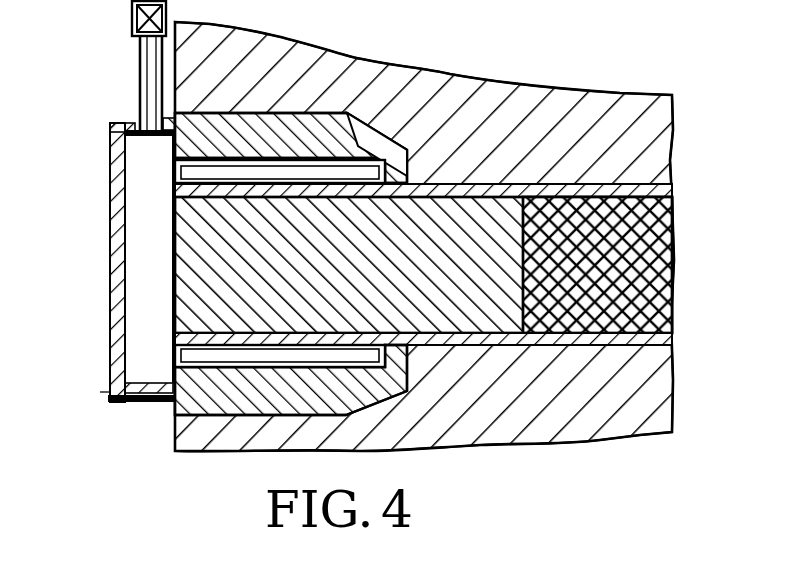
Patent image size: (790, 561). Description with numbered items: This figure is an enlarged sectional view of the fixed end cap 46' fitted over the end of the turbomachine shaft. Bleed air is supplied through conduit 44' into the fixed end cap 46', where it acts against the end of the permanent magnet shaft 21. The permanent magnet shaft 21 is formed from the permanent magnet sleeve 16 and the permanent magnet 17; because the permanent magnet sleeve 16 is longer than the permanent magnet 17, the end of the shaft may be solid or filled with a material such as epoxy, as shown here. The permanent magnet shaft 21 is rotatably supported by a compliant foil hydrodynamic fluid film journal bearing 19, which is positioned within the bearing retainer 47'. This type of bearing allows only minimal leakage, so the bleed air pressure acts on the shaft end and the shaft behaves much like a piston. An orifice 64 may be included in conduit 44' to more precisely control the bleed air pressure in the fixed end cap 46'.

The permanent magnet sleeve 16 is at (590, 180).
The permanent magnet 17 is at (658, 233).
The compliant foil hydrodynamic fluid film journal bearing 19 is at (372, 130).
The permanent magnet shaft 21 is at (452, 174).
The conduit 44' is at (106, 83).
The fixed end cap 46' is at (101, 260).
The bearing retainer 47' is at (291, 129).
The orifice 64 is at (132, 16).